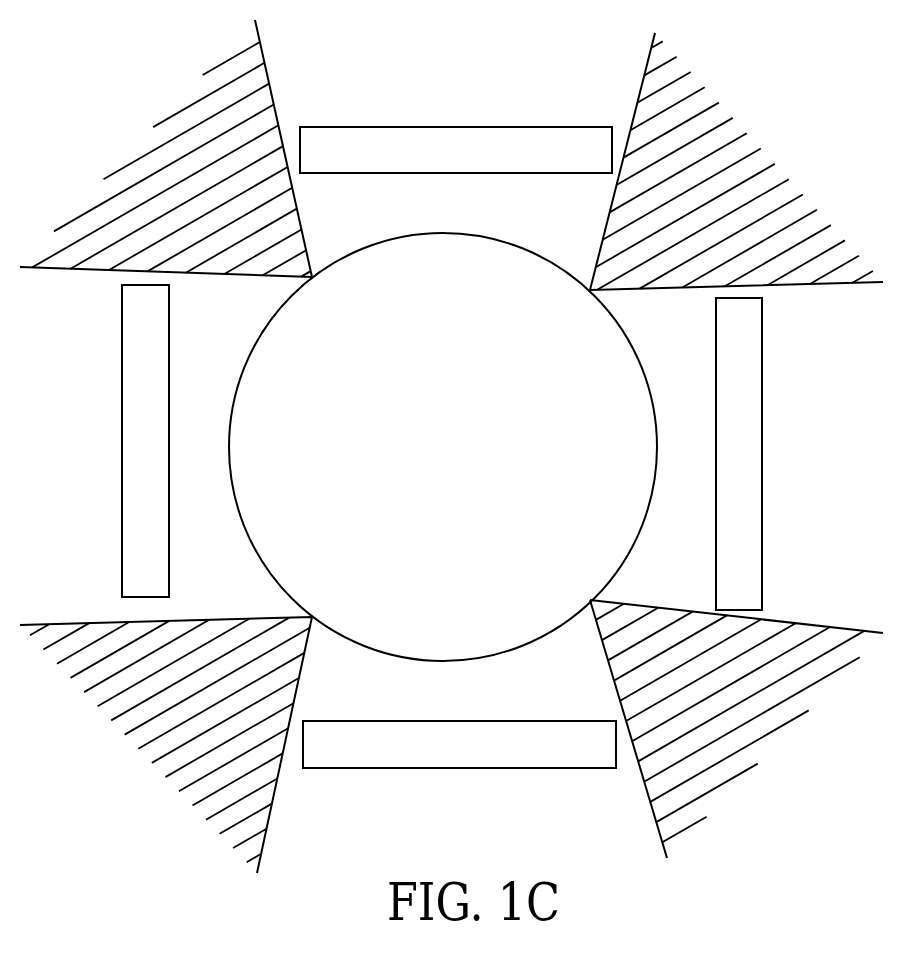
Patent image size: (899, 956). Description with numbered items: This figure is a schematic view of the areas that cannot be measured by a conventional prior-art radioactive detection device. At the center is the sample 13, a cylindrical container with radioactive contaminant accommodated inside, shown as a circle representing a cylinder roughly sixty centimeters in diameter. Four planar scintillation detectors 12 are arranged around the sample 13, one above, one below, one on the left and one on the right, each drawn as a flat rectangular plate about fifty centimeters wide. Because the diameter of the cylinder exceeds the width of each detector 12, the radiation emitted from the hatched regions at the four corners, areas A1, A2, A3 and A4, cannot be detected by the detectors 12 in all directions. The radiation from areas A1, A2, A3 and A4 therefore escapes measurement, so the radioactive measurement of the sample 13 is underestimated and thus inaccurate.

The planar scintillation detectors 12 is at (755, 447).
The sample 13 is at (455, 440).
The area A1 is at (166, 148).
The area A2 is at (166, 745).
The area A3 is at (736, 729).
The area A4 is at (736, 161).